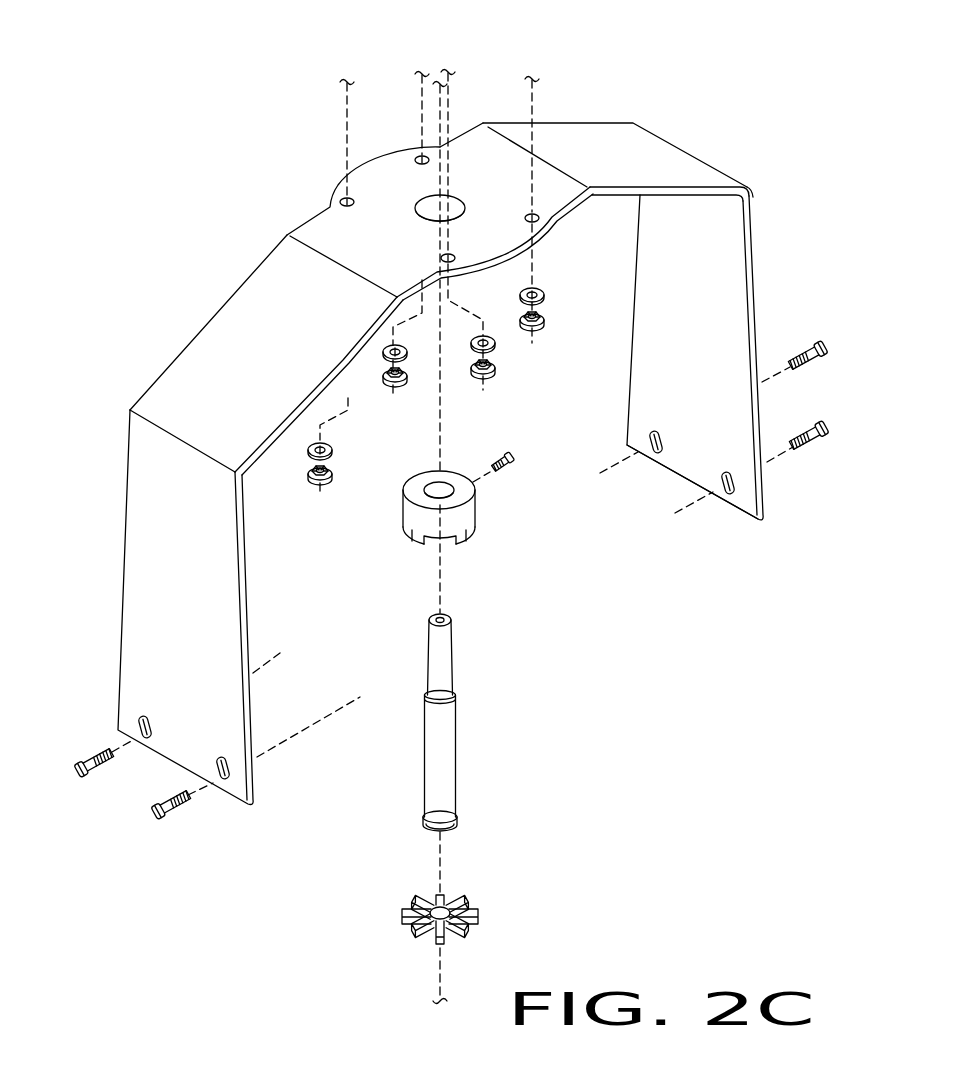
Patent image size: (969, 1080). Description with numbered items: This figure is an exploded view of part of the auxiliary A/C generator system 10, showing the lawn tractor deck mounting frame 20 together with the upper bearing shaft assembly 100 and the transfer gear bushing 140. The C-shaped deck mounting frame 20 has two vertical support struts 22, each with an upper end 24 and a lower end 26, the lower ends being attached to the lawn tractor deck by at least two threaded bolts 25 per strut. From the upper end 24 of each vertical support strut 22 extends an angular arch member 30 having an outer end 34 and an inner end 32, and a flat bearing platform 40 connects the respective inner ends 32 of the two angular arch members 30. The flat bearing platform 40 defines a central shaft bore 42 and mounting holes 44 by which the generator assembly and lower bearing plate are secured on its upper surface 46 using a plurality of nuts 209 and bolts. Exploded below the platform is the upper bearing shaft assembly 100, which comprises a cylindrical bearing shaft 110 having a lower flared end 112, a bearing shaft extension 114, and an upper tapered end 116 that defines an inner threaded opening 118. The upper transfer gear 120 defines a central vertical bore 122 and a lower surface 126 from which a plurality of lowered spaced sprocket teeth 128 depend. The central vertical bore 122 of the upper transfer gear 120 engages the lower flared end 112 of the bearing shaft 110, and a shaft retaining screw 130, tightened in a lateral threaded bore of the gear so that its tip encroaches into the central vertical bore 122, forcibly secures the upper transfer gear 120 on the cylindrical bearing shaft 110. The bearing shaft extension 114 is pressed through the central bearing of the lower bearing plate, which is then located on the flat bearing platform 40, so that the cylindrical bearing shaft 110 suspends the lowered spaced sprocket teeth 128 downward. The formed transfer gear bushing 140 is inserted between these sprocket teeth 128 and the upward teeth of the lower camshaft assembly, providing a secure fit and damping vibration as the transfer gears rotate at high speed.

The auxiliary A/C generator system 10 is at (210, 69).
The lawn tractor deck mounting frame 20 is at (647, 130).
The vertical support strut 22 is at (147, 610).
The upper end 24 is at (730, 207).
The threaded bolt 25 is at (155, 823).
The lower end 26 is at (747, 500).
The angular arch member 30 is at (200, 327).
The inner end 32 is at (293, 257).
The outer end 34 is at (158, 413).
The flat bearing platform 40 is at (335, 190).
The central shaft bore 42 is at (433, 205).
The mounting hole 44 is at (547, 222).
The upper surface 46 is at (468, 138).
The upper bearing shaft assembly 100 is at (553, 450).
The cylindrical bearing shaft 110 is at (425, 763).
The lower flared end 112 is at (433, 825).
The bearing shaft extension 114 is at (445, 782).
The upper tapered end 116 is at (447, 638).
The inner threaded opening 118 is at (437, 618).
The upper transfer gear 120 is at (403, 510).
The central vertical bore 122 is at (433, 488).
The lower surface 126 is at (437, 540).
The lowered spaced sprocket teeth 128 is at (467, 540).
The shaft retaining screw 130 is at (510, 455).
The transfer gear bushing 140 is at (402, 920).
The nut 209 is at (545, 325).